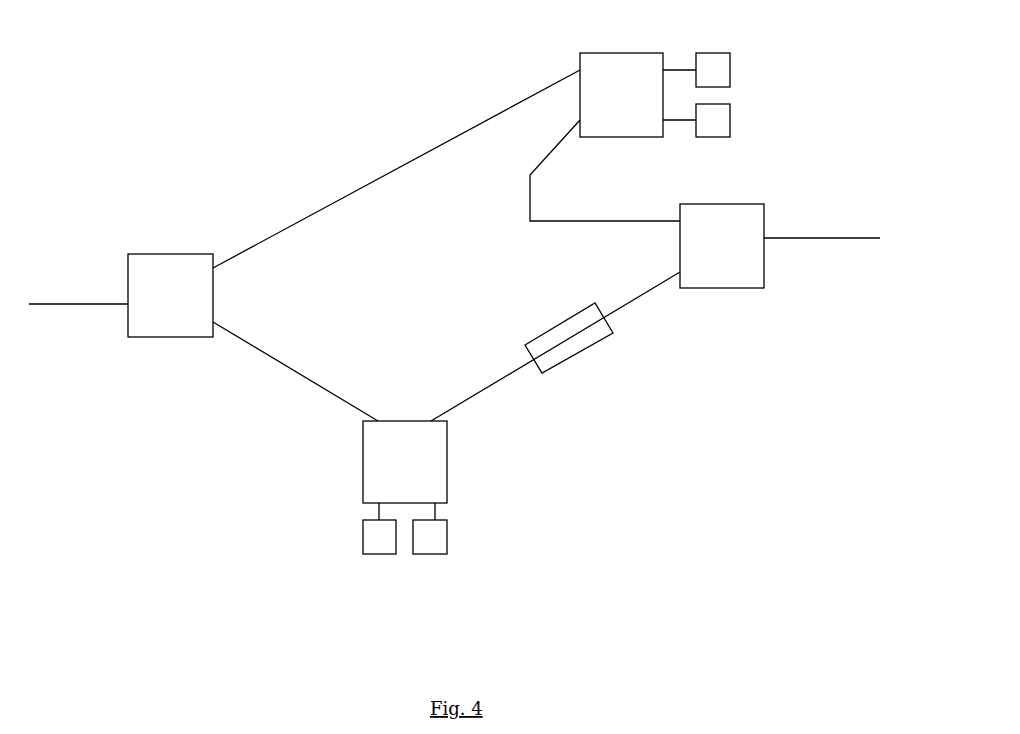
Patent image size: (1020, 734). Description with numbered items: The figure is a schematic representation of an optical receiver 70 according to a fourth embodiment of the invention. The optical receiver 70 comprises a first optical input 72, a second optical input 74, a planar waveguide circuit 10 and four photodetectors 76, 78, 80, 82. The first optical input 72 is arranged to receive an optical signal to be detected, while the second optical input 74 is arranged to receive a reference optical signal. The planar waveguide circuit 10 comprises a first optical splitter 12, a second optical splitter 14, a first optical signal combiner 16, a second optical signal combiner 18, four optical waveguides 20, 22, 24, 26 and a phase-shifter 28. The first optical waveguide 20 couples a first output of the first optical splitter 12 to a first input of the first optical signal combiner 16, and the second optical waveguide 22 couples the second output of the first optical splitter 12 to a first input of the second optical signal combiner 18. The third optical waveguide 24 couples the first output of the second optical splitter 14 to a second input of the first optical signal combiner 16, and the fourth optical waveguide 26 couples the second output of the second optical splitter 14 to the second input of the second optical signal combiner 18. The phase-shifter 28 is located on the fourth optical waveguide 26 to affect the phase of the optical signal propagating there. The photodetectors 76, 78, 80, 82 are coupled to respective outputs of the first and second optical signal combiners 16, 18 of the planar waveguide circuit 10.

The planar waveguide circuit 10 is at (229, 444).
The first optical splitter 12 is at (171, 263).
The second optical splitter 14 is at (724, 280).
The first optical signal combiner 16 is at (622, 63).
The second optical signal combiner 18 is at (437, 467).
The first optical waveguide 20 is at (372, 178).
The second optical waveguide 22 is at (287, 365).
The third optical waveguide 24 is at (605, 220).
The fourth optical waveguide 26 is at (640, 290).
The phase-shifter 28 is at (560, 363).
The optical receiver 70 is at (231, 90).
The first optical input 72 is at (54, 304).
The second optical input 74 is at (858, 240).
The photodetector 76 is at (716, 58).
The photodetector 78 is at (718, 130).
The photodetector 80 is at (445, 538).
The photodetector 82 is at (370, 536).